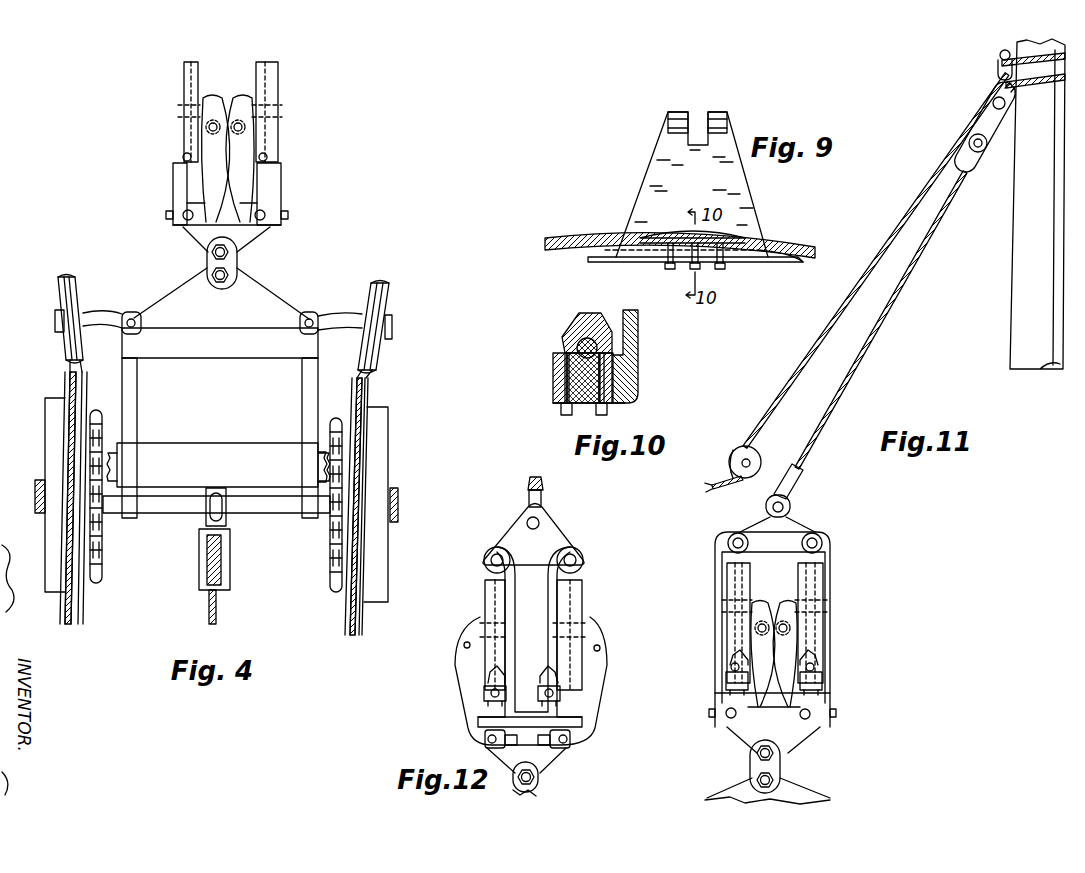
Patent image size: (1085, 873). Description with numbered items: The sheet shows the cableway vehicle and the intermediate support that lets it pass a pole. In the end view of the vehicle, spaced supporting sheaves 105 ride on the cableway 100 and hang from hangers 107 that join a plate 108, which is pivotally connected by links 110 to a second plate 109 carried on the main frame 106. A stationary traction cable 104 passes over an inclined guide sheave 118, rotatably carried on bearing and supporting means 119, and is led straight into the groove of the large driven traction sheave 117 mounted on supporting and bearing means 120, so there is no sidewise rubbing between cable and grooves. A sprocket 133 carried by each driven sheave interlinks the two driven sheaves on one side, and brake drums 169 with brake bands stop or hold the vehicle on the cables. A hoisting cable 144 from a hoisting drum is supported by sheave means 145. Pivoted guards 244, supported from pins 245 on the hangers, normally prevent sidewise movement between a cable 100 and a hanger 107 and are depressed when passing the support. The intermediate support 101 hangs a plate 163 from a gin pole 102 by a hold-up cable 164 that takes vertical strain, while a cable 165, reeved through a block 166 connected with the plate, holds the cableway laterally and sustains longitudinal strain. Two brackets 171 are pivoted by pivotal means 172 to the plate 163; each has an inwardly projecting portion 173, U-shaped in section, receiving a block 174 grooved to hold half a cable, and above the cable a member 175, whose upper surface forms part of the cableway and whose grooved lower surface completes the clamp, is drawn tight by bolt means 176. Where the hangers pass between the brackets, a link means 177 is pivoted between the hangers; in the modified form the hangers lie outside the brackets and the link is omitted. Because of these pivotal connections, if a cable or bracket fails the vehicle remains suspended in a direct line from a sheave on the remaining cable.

In FIG. 4, the cableway 100 is at (187, 154).
In FIG. 10, the cableway 100 is at (577, 342).
In FIG. 11, the cableway 100 is at (815, 664).
In FIG. 12, the cableway 100 is at (500, 697).
In FIG. 11, the intermediate support 101 is at (960, 75).
In FIG. 11, the gin pole 102 is at (1018, 262).
In FIG. 4, the traction cable 104 is at (66, 276).
In FIG. 4, the supporting sheave 105 is at (262, 60).
In FIG. 11, the supporting sheave 105 is at (810, 580).
In FIG. 12, the supporting sheave 105 is at (490, 604).
In FIG. 4, the main frame 106 is at (259, 455).
In FIG. 4, the hanger 107 is at (246, 103).
In FIG. 11, the hanger 107 is at (790, 612).
In FIG. 12, the hanger 107 is at (462, 668).
In FIG. 4, the plate 108 is at (250, 240).
In FIG. 11, the plate 108 is at (800, 738).
In FIG. 12, the plate 108 is at (556, 757).
In FIG. 4, the plate 109 is at (161, 291).
In FIG. 11, the plate 109 is at (808, 790).
In FIG. 4, the link 110 is at (207, 264).
In FIG. 11, the link 110 is at (780, 763).
In FIG. 12, the link 110 is at (540, 783).
In FIG. 4, the driven traction sheave 117 is at (83, 614).
In FIG. 4, the guide sheave 118 is at (58, 292).
In FIG. 4, the bearing and supporting means 119 is at (127, 311).
In FIG. 4, the supporting and bearing means 120 is at (288, 508).
In FIG. 4, the sprocket 133 is at (102, 545).
In FIG. 4, the cable 144 is at (214, 615).
In FIG. 4, the sheave means 145 is at (228, 588).
In FIG. 11, the plate 163 is at (800, 527).
In FIG. 12, the plate 163 is at (552, 532).
In FIG. 11, the hold-up cable 164 is at (893, 307).
In FIG. 11, the cable 165 is at (890, 240).
In FIG. 11, the block 166 is at (758, 452).
In FIG. 4, the brake drum 169 is at (55, 452).
In FIG. 9, the bracket 171 is at (748, 211).
In FIG. 10, the bracket 171 is at (638, 329).
In FIG. 11, the bracket 171 is at (833, 598).
In FIG. 12, the bracket 171 is at (528, 572).
In FIG. 11, the pivotal means 172 is at (822, 543).
In FIG. 12, the pivotal means 172 is at (584, 560).
In FIG. 9, the inwardly projecting portion 173 is at (646, 255).
In FIG. 10, the inwardly projecting portion 173 is at (560, 403).
In FIG. 11, the inwardly projecting portion 173 is at (754, 709).
In FIG. 12, the inwardly projecting portion 173 is at (478, 712).
In FIG. 10, the block 174 is at (595, 379).
In FIG. 11, the block 174 is at (820, 675).
In FIG. 12, the block 174 is at (502, 708).
In FIG. 9, the member 175 is at (668, 233).
In FIG. 10, the member 175 is at (576, 324).
In FIG. 11, the member 175 is at (740, 655).
In FIG. 12, the member 175 is at (508, 674).
In FIG. 9, the bolt means 176 is at (722, 270).
In FIG. 10, the bolt means 176 is at (567, 383).
In FIG. 4, the link means 177 is at (236, 126).
In FIG. 11, the link means 177 is at (790, 618).
In FIG. 4, the pivoted guard 244 is at (173, 178).
In FIG. 11, the pivoted guard 244 is at (828, 693).
In FIG. 4, the pin 245 is at (166, 215).
In FIG. 11, the pin 245 is at (838, 717).